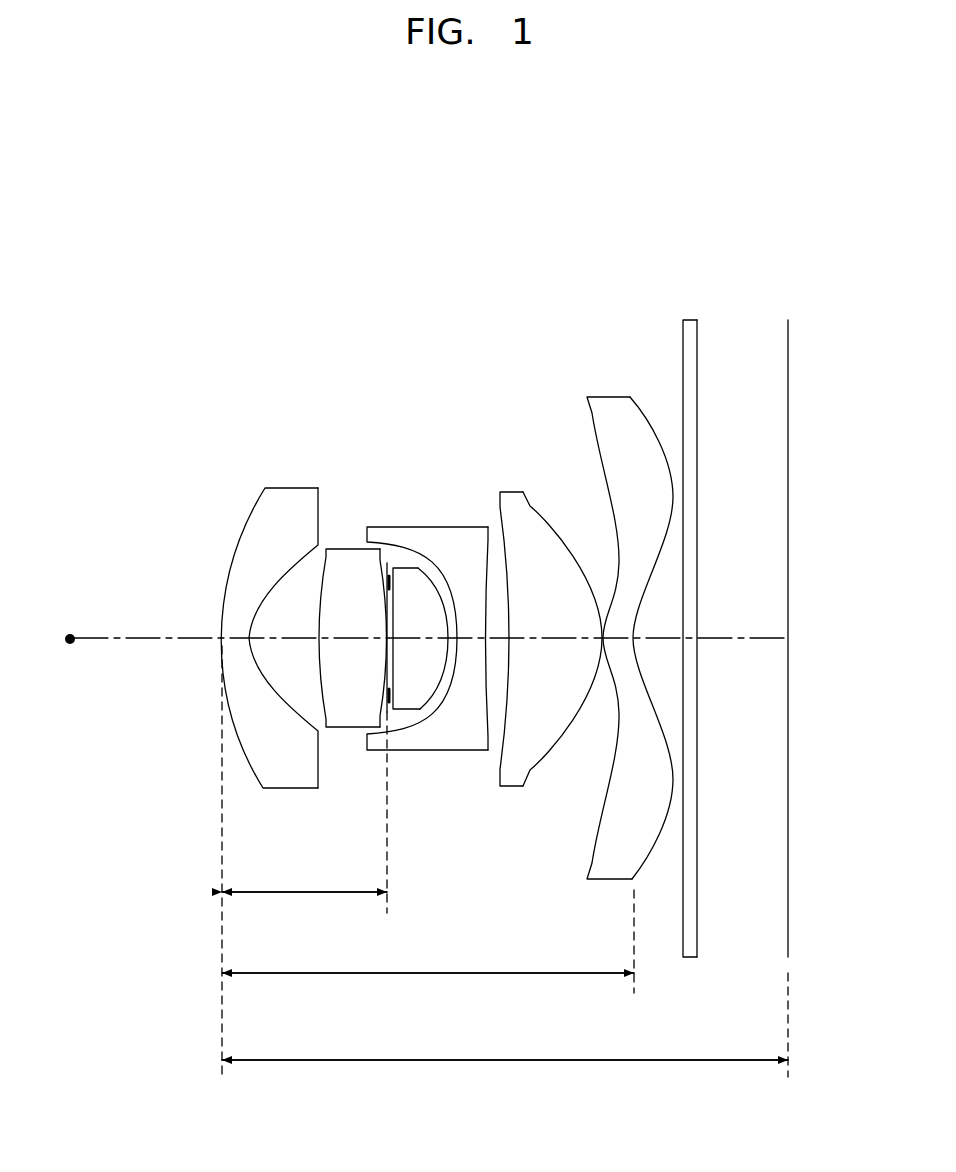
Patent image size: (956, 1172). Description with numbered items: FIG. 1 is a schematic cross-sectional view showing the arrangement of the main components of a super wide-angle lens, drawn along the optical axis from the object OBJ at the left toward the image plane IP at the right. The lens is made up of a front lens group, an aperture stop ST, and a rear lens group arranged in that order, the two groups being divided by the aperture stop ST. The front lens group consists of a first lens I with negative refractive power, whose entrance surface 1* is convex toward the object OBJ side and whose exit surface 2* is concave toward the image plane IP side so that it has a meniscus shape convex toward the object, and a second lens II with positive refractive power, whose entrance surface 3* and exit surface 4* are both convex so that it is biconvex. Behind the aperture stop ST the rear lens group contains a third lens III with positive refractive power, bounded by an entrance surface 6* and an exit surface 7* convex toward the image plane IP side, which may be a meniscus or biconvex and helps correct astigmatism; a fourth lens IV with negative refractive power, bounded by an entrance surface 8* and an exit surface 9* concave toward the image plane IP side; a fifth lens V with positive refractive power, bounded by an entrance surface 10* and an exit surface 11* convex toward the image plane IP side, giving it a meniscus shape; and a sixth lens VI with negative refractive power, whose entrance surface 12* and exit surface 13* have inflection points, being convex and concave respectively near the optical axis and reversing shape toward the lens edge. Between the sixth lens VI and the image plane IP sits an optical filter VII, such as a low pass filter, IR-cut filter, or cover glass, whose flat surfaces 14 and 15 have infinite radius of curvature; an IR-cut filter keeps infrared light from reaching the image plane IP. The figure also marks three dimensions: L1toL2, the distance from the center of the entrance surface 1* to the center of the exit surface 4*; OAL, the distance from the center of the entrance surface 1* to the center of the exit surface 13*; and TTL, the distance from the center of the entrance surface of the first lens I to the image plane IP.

The entrance surface of the first lens 1 is at (255, 512).
The exit surface of the first lens 2 is at (310, 549).
The entrance surface of the second lens 3 is at (340, 556).
The exit surface of the second lens 4 is at (389, 598).
The aperture stop ST is at (388, 562).
The entrance surface of the third lens 6 is at (394, 600).
The exit surface of the third lens 7 is at (420, 568).
The entrance surface of the fourth lens 8 is at (446, 562).
The exit surface of the fourth lens 9 is at (483, 548).
The entrance surface of the fifth lens 10 is at (502, 520).
The exit surface of the fifth lens 11 is at (528, 520).
The entrance surface of the sixth lens 12 is at (605, 422).
The exit surface of the sixth lens 13 is at (644, 409).
The entrance surface of the optical filter 14 is at (682, 338).
The exit surface of the optical filter 15 is at (699, 338).
The image plane IP is at (789, 340).
The object OBJ is at (71, 632).
The first lens I is at (289, 836).
The second lens II is at (344, 775).
The third lens III is at (414, 765).
The fourth lens IV is at (465, 796).
The fifth lens V is at (511, 828).
The sixth lens VI is at (597, 920).
The optical filter VII is at (689, 1005).
The distance between first lens entrance surface and second lens exit surface L1toL2 is at (304, 909).
The overall lens length OAL is at (428, 990).
The total track length TTL is at (505, 1077).